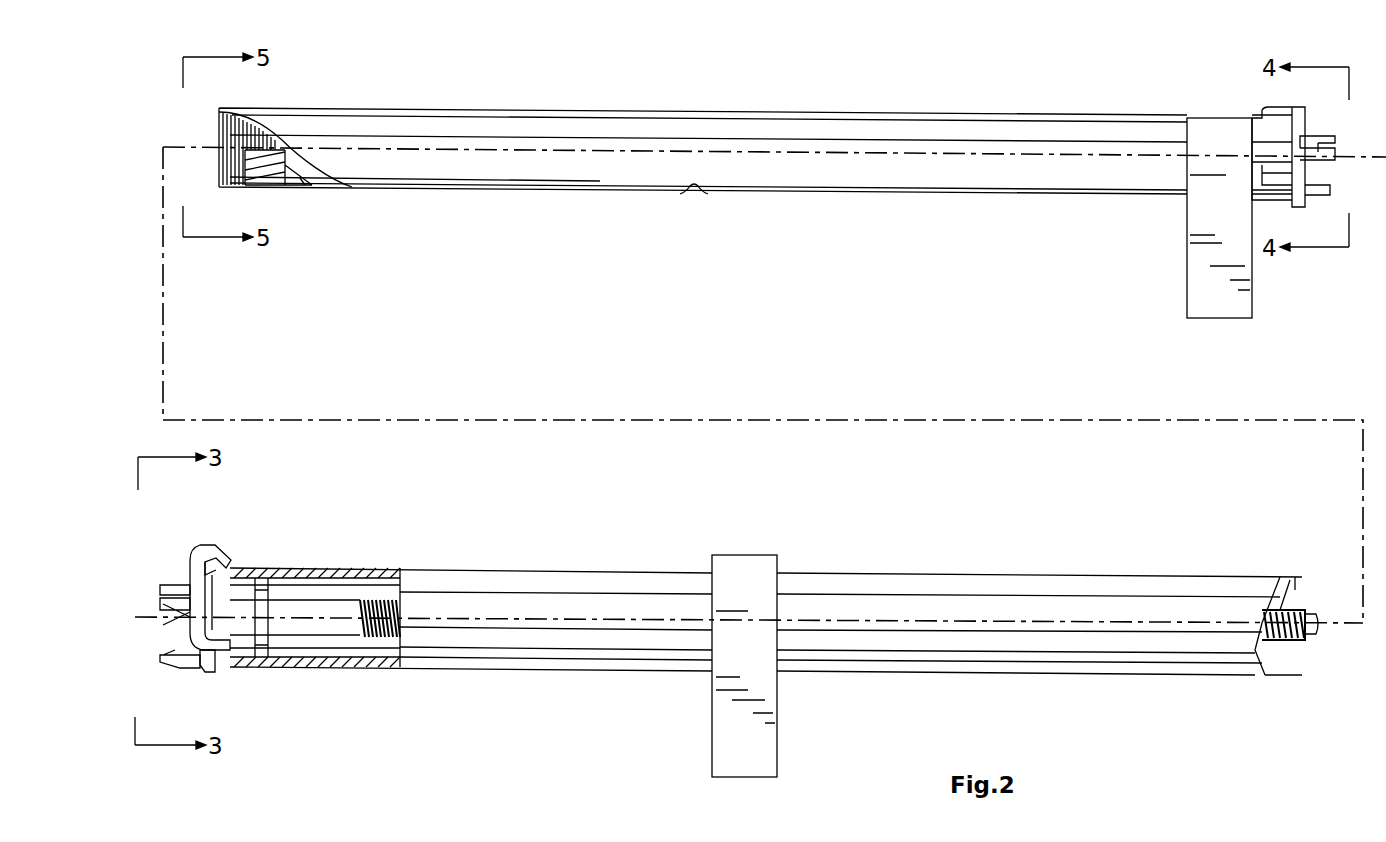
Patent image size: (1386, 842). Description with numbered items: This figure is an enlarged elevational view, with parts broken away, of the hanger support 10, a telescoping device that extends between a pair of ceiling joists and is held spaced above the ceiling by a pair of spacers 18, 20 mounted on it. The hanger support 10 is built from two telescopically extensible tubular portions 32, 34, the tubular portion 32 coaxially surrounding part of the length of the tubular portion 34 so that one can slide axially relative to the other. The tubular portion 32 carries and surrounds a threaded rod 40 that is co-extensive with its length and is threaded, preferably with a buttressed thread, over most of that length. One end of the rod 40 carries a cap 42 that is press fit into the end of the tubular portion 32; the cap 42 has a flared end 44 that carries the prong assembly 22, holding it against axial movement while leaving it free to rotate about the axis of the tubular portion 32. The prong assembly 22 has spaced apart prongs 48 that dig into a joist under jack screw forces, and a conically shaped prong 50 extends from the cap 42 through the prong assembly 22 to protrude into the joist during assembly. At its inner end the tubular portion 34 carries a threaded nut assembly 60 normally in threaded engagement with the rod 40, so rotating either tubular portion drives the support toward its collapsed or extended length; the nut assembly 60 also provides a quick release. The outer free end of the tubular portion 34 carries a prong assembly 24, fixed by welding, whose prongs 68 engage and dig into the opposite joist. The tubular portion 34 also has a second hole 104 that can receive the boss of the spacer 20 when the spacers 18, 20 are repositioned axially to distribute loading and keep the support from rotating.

The hanger support 10 is at (666, 398).
The spacer 18 is at (748, 727).
The spacer 20 is at (1200, 286).
The prong assembly 22 is at (168, 556).
The prong assembly 24 is at (1252, 99).
The tubular portion 32 is at (598, 582).
The tubular portion 34 is at (385, 122).
The threaded rod 40 is at (1312, 632).
The cap 42 is at (268, 655).
The flared end 44 is at (207, 670).
The prongs 48 is at (172, 662).
The conically shaped prong 50 is at (180, 621).
The threaded nut assembly 60 is at (274, 195).
The prongs 68 is at (1318, 136).
The second hole 104 is at (692, 196).